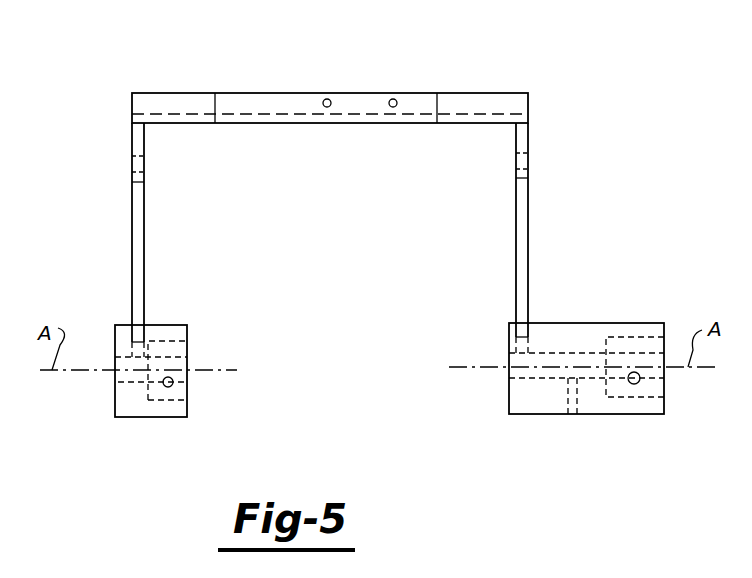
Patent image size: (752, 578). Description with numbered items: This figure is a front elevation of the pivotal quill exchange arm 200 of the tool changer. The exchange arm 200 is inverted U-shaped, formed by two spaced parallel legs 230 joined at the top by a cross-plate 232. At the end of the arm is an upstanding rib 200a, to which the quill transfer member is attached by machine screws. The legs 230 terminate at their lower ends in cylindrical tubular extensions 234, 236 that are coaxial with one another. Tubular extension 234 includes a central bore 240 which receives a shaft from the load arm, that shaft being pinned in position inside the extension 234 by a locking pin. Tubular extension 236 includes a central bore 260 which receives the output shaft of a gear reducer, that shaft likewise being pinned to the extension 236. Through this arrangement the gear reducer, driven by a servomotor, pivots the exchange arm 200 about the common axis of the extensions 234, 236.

The pivotal quill exchange arm 200 is at (130, 223).
The upstanding rib 200a is at (412, 100).
The legs 230 is at (140, 250).
The cross-plate 232 is at (278, 117).
The tubular extension 234 is at (590, 327).
The tubular extension 236 is at (177, 327).
The central bore 240 is at (558, 372).
The central bore 260 is at (127, 377).